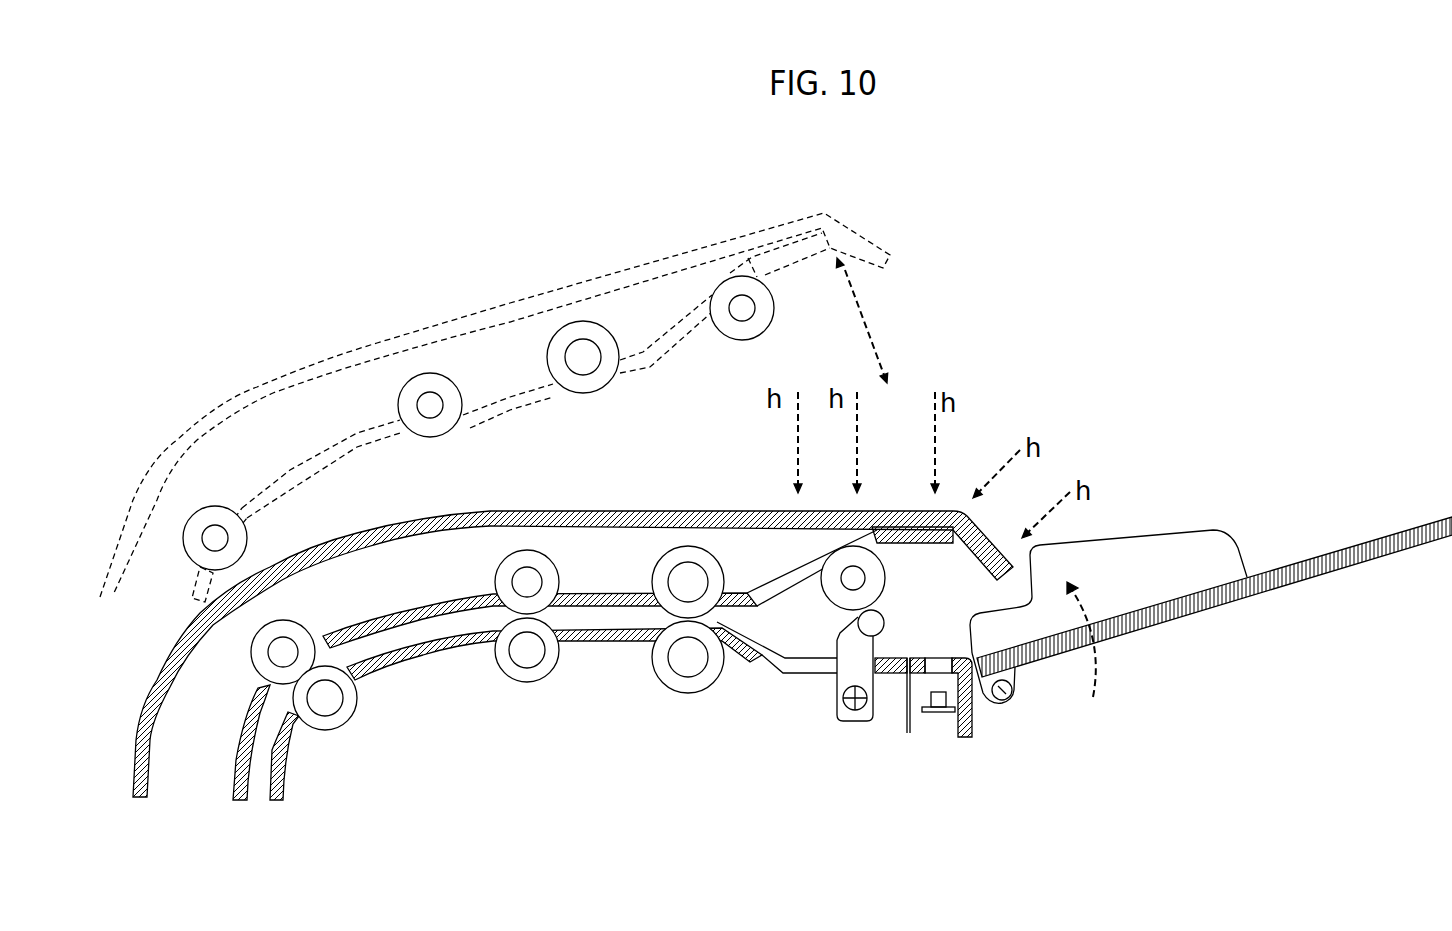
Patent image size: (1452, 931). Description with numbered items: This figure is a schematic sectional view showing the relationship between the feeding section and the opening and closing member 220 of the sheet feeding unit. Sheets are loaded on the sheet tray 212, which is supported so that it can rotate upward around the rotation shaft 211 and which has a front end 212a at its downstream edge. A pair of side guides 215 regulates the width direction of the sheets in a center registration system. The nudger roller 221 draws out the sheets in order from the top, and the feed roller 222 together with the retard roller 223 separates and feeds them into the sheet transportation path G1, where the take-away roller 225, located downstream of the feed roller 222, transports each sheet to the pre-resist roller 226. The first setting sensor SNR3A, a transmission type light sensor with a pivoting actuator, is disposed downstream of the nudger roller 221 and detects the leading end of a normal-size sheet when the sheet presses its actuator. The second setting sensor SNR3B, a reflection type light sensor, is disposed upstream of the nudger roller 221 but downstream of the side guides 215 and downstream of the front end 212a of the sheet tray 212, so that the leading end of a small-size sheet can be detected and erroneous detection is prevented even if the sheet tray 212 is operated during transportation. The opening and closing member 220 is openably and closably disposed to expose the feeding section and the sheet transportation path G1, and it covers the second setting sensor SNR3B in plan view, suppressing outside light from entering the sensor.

The opening and closing member 220 is at (927, 510).
The nudger roller 221 is at (830, 578).
The feed roller 222 is at (660, 578).
The retard roller 223 is at (660, 660).
The take-away roller 225 is at (483, 650).
The pre-resist roller 226 is at (309, 742).
The sheet transportation path G1 is at (458, 623).
The rotation shaft 211 is at (1015, 695).
The sheet tray 212 is at (1382, 537).
The front end 212a is at (967, 655).
The side guides 215 is at (1138, 547).
The first setting sensor SNR3A is at (833, 729).
The second setting sensor SNR3B is at (940, 722).